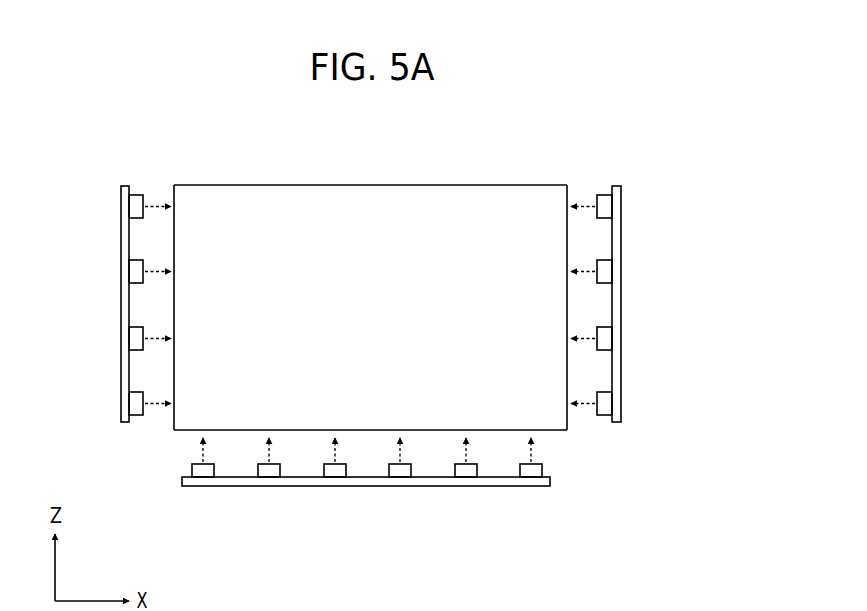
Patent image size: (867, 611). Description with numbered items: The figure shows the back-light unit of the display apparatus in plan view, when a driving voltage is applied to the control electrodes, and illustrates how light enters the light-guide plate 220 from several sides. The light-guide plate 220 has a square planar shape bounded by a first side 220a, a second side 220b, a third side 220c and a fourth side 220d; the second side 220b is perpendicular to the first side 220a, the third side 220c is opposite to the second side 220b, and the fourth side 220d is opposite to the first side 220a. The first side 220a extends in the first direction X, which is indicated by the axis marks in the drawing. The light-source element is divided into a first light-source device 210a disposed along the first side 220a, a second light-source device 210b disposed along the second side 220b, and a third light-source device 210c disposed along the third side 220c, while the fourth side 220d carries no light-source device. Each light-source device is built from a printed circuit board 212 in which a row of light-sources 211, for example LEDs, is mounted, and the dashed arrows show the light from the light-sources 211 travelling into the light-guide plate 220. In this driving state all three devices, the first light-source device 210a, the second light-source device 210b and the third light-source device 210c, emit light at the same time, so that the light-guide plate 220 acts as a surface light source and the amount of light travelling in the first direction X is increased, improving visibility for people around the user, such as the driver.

The light-guide plate 220 is at (372, 299).
The first side 220a is at (188, 432).
The second side 220b is at (567, 428).
The third side 220c is at (173, 188).
The fourth side 220d is at (551, 184).
The first light-source device 210a is at (366, 499).
The second light-source device 210b is at (629, 312).
The third light-source device 210c is at (114, 312).
The light-source 211 is at (533, 474).
The printed circuit board 212 is at (470, 484).